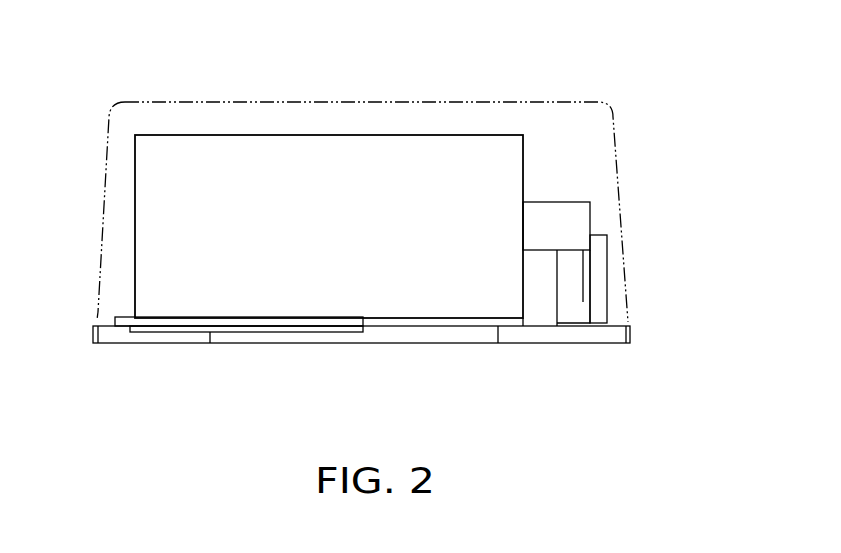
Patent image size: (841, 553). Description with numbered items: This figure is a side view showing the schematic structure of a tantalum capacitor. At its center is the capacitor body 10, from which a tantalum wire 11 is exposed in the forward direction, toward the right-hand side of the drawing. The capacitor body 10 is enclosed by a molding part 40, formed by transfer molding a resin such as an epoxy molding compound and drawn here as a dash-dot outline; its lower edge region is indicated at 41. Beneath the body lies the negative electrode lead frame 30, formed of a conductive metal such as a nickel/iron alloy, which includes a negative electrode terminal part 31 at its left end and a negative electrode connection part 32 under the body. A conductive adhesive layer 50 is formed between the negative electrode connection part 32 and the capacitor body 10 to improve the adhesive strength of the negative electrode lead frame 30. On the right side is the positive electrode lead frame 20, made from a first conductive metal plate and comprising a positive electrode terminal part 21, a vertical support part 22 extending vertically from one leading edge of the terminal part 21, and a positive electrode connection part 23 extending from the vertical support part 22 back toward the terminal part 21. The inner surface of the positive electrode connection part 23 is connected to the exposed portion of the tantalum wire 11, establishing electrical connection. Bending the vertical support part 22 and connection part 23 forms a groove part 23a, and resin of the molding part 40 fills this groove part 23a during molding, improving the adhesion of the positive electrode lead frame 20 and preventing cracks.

The capacitor body 10 is at (339, 148).
The tantalum wire 11 is at (587, 223).
The positive electrode lead frame 20 is at (590, 340).
The positive electrode terminal part 21 is at (540, 345).
The vertical support part 22 is at (565, 268).
The positive electrode connection part 23 is at (602, 280).
The groove part 23a is at (582, 262).
The negative electrode lead frame 30 is at (157, 342).
The negative electrode terminal part 31 is at (122, 337).
The negative electrode connection part 32 is at (297, 330).
The molding part 40 is at (440, 106).
The cover lower edge 41 is at (350, 338).
The conductive adhesive layer 50 is at (223, 322).